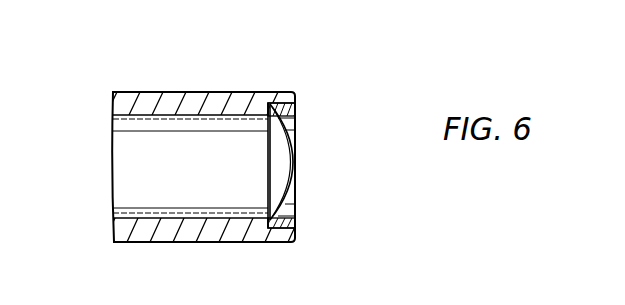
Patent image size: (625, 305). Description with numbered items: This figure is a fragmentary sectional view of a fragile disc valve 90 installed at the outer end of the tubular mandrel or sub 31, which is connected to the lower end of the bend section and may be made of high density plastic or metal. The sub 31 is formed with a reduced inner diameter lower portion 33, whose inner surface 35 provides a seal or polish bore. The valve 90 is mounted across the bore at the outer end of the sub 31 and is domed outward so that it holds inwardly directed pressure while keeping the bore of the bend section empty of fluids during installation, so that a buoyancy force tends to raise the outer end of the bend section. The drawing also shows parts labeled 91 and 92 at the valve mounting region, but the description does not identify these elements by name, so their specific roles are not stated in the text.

The mandrel or sub 31 is at (170, 92).
The reduced inner diameter lower portion 33 is at (172, 232).
The inner surface 35 is at (147, 215).
The fragile disc valve 90 is at (295, 165).
The lens seat 91 is at (268, 120).
The retaining ring 92 is at (295, 122).